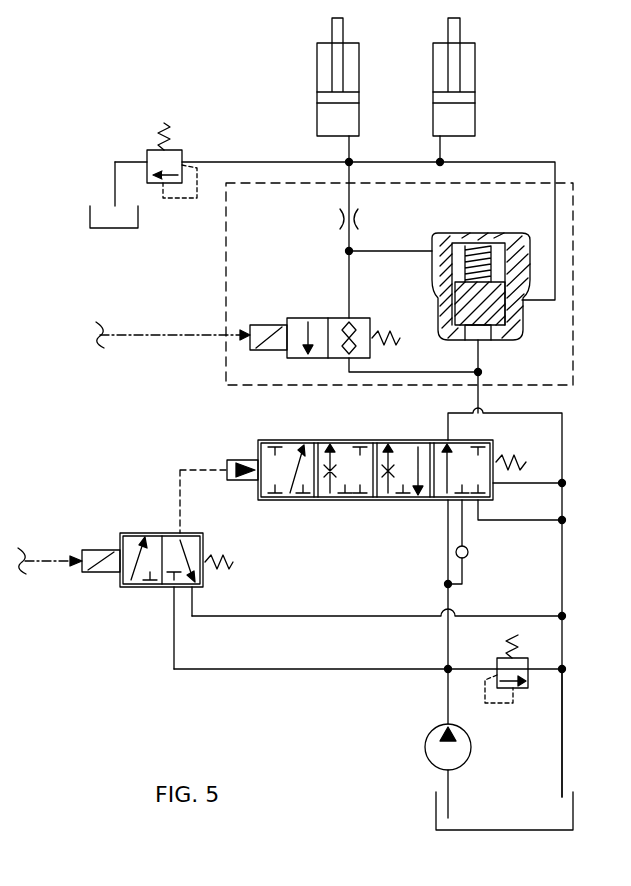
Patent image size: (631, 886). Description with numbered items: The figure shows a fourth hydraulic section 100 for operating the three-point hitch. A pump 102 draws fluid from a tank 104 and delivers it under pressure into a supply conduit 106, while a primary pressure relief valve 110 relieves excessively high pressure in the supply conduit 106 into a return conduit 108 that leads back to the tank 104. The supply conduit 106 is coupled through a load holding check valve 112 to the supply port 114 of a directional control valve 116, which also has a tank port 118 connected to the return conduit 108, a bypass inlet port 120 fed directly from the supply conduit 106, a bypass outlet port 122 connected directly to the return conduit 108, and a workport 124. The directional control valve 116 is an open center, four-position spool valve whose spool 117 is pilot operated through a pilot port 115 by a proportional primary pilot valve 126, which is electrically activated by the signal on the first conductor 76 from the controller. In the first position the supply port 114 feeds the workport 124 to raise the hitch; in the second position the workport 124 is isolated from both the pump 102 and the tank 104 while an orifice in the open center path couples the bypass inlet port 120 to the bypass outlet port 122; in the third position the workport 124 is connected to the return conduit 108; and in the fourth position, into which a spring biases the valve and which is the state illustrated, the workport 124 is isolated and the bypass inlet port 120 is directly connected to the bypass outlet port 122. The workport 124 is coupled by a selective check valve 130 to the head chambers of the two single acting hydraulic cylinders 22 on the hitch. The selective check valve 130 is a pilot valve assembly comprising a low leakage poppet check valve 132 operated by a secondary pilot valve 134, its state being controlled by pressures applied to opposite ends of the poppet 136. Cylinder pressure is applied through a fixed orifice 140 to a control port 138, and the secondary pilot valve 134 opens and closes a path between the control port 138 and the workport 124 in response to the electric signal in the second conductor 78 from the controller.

The fourth hydraulic section 100 is at (194, 86).
The single acting hydraulic cylinders 22 is at (317, 78).
The selective check valve 130 is at (220, 273).
The fixed orifice 140 is at (338, 222).
The poppet check valve 132 is at (458, 267).
The control port 138 is at (440, 255).
The poppet 136 is at (455, 302).
The secondary pilot valve 134 is at (313, 318).
The second conductor 78 is at (178, 338).
The spool 117 is at (287, 450).
The pilot port 115 is at (245, 465).
The bypass outlet port 122 is at (445, 437).
The workport 124 is at (480, 440).
The tank port 118 is at (480, 505).
The bypass inlet port 120 is at (361, 483).
The directional control valve 116 is at (327, 505).
The supply port 114 is at (463, 505).
The load holding check valve 112 is at (468, 556).
The primary pilot valve 126 is at (125, 535).
The first conductor 76 is at (57, 566).
The supply conduit 106 is at (448, 628).
The pump 102 is at (425, 742).
The tank 104 is at (436, 812).
The return conduit 108 is at (562, 752).
The primary pressure relief valve 110 is at (515, 690).